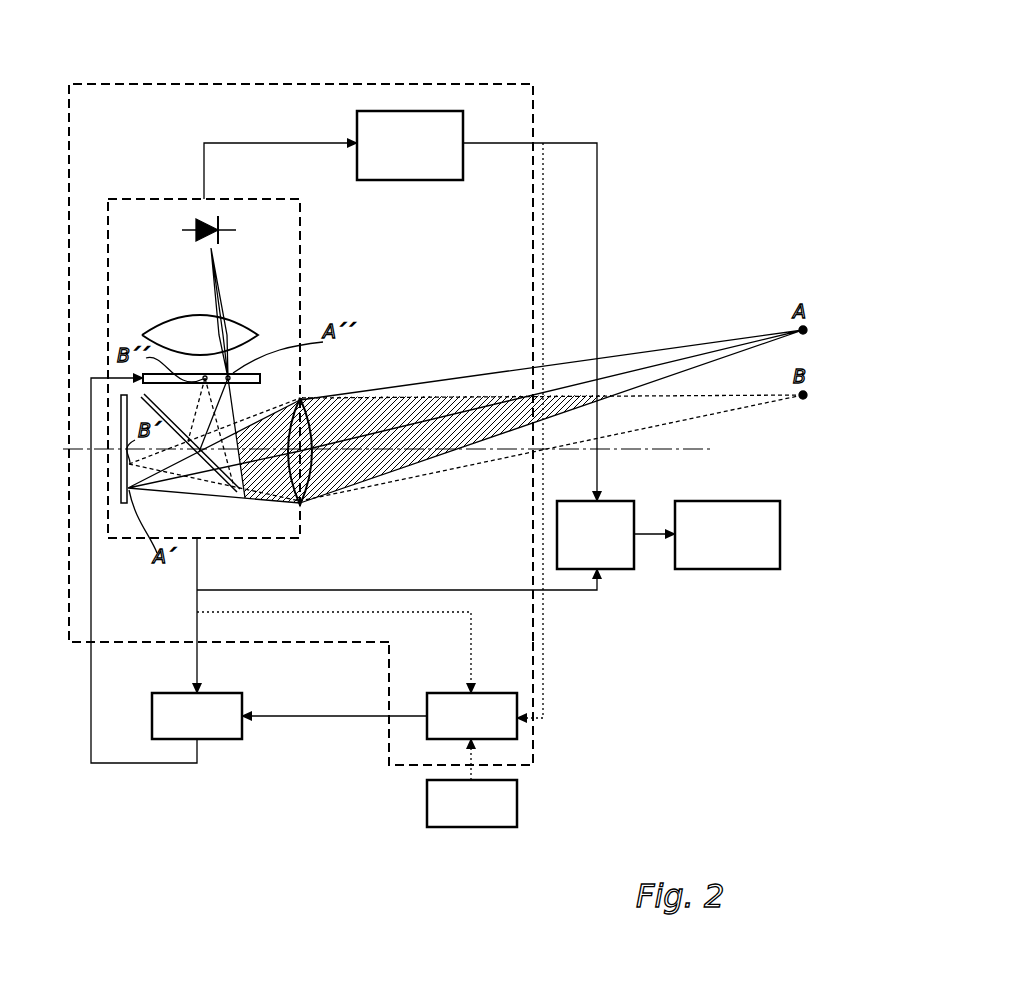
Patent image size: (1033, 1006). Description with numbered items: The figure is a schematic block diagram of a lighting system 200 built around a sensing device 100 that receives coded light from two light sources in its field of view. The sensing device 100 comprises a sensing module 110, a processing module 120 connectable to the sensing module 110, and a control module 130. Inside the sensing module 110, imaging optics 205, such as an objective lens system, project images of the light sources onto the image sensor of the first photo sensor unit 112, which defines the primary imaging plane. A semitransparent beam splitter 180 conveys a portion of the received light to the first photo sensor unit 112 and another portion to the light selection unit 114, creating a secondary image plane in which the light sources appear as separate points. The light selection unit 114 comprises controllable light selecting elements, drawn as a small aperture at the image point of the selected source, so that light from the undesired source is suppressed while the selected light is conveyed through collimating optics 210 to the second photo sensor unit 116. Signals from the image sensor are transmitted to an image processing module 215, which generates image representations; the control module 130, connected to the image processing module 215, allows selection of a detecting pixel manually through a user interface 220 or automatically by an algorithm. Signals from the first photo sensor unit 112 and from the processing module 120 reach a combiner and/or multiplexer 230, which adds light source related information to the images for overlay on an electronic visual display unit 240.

The sensing device 100 is at (488, 82).
The lighting system 200 is at (689, 112).
The sensing module 110 is at (180, 199).
The second photo sensor unit 116 is at (221, 232).
The processing module 120 is at (416, 180).
The collimating optics 210 is at (248, 332).
The light selection unit 114 is at (262, 378).
The semitransparent beam splitter 180 is at (183, 470).
The imaging optics 205 is at (305, 481).
The first photo sensor unit 112 is at (126, 503).
The image processing module 215 is at (222, 740).
The control module 130 is at (517, 705).
The user interface 220 is at (517, 798).
The combiner and/or multiplexer 230 is at (614, 570).
The electronic visual display unit 240 is at (742, 570).